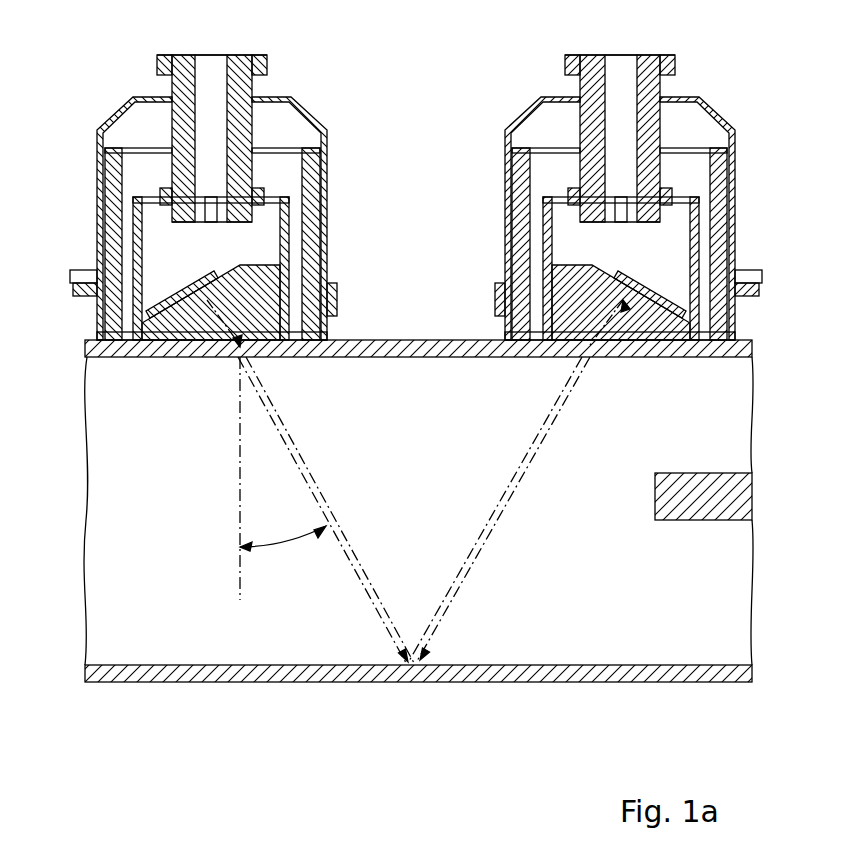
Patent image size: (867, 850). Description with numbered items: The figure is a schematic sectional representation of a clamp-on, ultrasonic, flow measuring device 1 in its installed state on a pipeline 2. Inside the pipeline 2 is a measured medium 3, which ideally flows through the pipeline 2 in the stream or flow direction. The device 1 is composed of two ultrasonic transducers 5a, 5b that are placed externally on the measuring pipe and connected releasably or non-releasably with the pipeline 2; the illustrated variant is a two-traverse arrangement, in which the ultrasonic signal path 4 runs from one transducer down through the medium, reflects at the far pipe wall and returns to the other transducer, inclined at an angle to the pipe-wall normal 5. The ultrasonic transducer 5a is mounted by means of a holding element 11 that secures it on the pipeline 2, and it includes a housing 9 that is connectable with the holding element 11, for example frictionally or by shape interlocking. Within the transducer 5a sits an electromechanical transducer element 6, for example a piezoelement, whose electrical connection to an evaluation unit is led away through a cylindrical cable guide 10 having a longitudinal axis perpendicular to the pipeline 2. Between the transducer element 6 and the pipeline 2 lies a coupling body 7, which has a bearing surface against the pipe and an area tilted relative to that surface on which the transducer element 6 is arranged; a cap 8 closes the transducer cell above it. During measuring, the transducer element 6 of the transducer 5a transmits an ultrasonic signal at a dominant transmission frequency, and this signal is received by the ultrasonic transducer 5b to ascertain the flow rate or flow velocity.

The clamp-on, ultrasonic, flow measuring device 1 is at (424, 133).
The pipeline 2 is at (172, 674).
The measured medium 3 is at (118, 535).
The ultrasonic signal path 4 is at (340, 568).
The normal to pipe wall 5 is at (238, 583).
The ultrasonic transducer 5a is at (258, 244).
The ultrasonic transducer 5b is at (670, 258).
The electromechanical transducer element 6 is at (195, 292).
The coupling body 7 is at (97, 329).
The transducer cap 8 is at (258, 198).
The housing 9 is at (548, 126).
The cylindrical cable guide 10 is at (213, 72).
The holding element 11 is at (330, 302).